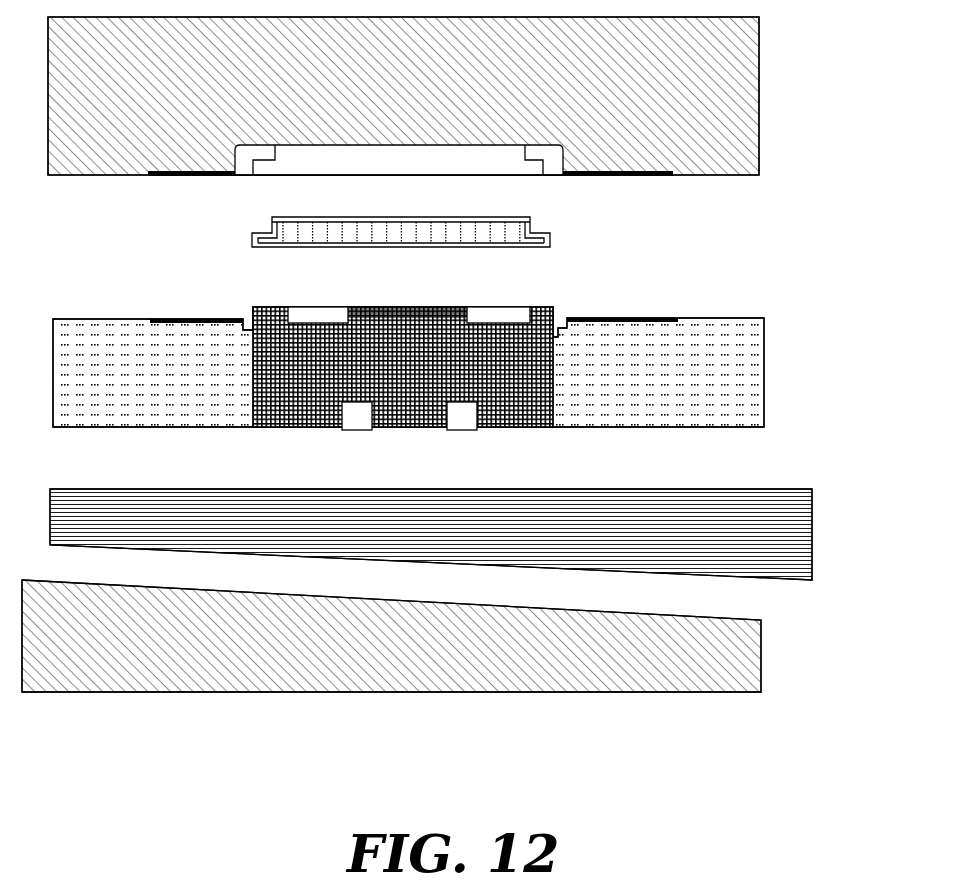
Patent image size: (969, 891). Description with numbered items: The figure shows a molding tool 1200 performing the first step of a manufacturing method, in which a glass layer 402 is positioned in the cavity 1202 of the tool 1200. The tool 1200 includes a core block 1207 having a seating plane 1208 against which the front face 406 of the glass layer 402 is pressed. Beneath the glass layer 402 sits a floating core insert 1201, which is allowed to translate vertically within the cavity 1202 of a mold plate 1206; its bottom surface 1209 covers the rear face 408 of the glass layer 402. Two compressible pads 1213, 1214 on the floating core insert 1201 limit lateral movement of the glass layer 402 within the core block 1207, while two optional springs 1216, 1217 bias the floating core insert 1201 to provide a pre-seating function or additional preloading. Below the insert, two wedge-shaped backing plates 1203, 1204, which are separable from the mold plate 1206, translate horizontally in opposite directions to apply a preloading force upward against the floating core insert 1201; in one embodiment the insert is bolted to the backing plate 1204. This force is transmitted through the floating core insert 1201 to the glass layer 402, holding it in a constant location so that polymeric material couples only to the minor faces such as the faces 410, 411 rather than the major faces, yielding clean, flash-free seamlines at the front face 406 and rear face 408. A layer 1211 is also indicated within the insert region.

The tool 1200 is at (193, 717).
The floating core insert 1201 is at (270, 307).
The cavity 1202 is at (560, 392).
The wedge-shaped backing plate 1203 is at (581, 668).
The wedge-shaped backing plate 1204 is at (643, 557).
The mold plate 1206 is at (737, 332).
The core block 1207 is at (703, 152).
The seating plane 1208 is at (328, 146).
The bottom surface 1209 is at (419, 236).
The inner layer of mesh 1211 is at (555, 367).
The compressible pad 1213 is at (502, 312).
The compressible pad 1214 is at (326, 313).
The spring 1216 is at (357, 423).
The spring 1217 is at (463, 420).
The glass layer 402 is at (507, 237).
The front face 406 is at (378, 217).
The rear face 408 is at (330, 247).
The minor face 410 is at (419, 223).
The minor face 411 is at (550, 240).